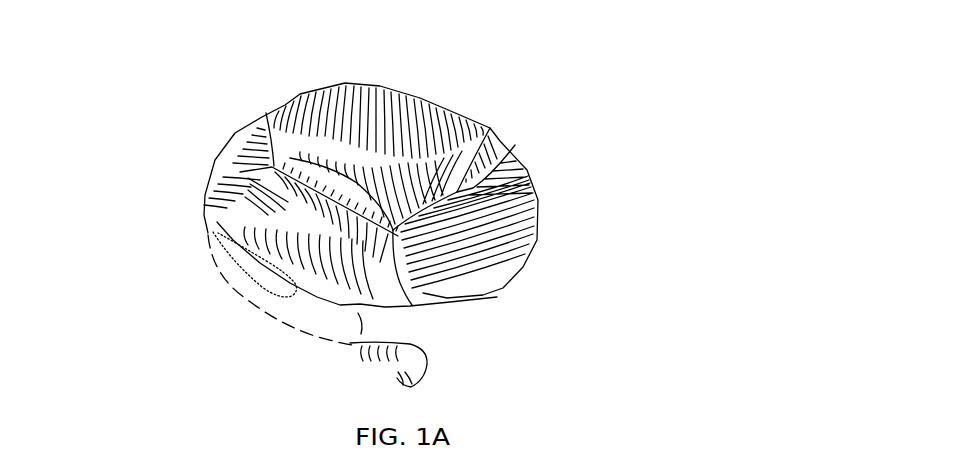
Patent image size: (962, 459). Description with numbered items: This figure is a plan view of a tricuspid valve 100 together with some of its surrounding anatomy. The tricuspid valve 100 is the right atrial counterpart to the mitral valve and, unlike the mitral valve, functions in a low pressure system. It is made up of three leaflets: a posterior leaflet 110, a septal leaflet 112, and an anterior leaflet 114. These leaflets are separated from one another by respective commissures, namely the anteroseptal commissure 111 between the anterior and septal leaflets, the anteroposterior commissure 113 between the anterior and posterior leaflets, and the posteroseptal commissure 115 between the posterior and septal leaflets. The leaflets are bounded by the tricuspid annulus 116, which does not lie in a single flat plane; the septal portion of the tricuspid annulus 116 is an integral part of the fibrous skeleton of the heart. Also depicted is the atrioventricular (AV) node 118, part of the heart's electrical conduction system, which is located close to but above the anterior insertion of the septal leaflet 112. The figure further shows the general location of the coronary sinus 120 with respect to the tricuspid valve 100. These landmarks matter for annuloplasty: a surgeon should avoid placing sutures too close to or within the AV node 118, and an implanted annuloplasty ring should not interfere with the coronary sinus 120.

The tricuspid valve 100 is at (498, 46).
The posterior leaflet 110 is at (433, 255).
The anteroseptal commissure 111 is at (257, 155).
The septal leaflet 112 is at (302, 235).
The anteroposterior commissure 113 is at (493, 150).
The anterior leaflet 114 is at (375, 100).
The posteroseptal commissure 115 is at (497, 297).
The tricuspid annulus 116 is at (427, 105).
The atrioventricular (AV) node 118 is at (268, 290).
The coronary sinus 120 is at (427, 366).